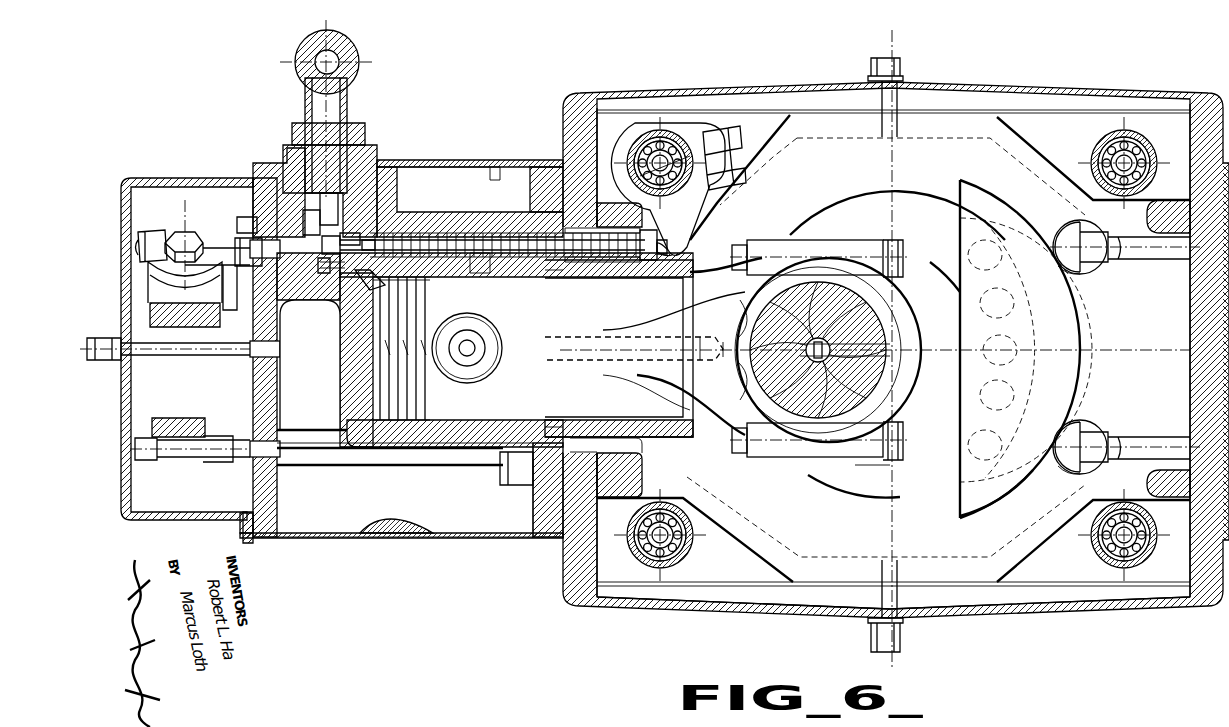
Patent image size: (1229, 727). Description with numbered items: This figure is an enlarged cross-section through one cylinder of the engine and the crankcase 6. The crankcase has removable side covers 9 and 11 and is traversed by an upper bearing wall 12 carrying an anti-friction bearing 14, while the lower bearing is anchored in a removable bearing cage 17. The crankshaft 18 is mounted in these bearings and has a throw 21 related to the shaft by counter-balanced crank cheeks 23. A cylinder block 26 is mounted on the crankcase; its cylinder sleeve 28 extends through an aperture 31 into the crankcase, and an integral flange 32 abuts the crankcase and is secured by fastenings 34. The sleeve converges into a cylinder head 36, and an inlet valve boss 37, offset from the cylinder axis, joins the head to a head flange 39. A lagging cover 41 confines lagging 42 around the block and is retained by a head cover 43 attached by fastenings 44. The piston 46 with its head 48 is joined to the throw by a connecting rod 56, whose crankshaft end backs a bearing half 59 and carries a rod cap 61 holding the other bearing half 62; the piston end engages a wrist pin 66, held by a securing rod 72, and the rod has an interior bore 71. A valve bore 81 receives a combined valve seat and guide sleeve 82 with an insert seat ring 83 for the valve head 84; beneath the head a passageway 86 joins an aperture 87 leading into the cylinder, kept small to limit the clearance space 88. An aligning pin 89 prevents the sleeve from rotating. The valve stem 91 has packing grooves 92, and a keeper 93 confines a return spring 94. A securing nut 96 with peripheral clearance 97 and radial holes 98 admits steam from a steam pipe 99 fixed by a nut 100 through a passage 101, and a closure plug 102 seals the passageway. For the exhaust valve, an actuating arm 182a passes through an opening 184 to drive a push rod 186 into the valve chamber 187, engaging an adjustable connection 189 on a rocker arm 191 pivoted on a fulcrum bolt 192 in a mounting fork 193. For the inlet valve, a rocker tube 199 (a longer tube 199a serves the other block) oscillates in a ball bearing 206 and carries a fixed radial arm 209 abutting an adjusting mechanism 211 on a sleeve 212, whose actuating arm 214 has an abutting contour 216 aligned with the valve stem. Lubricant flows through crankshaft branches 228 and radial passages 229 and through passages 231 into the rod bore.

The crankcase 6 is at (563, 572).
The side cover 9 is at (990, 609).
The side cover 11 is at (1062, 86).
The upper bearing wall 12 is at (833, 567).
The anti-friction bearing 14 is at (870, 483).
The bearing cage 17 is at (885, 353).
The crankshaft 18 is at (940, 227).
The throw 21 is at (813, 253).
The crank cheek 23 is at (990, 207).
The cylinder block 26 is at (461, 490).
The cylinder sleeve 28 is at (427, 448).
The aperture 31 is at (600, 447).
The flange 32 is at (540, 175).
The fastening 34 is at (517, 487).
The cylinder head 36 is at (350, 357).
The valve boss 37 is at (307, 280).
The head flange 39 is at (277, 512).
The lagging cover 41 is at (483, 160).
The lagging 42 is at (393, 530).
The head cover 43 is at (227, 513).
The fastening 44 is at (113, 363).
The piston 46 is at (547, 410).
The piston head 48 is at (372, 378).
The connecting rod 56 is at (641, 316).
The bearing half 59 is at (737, 410).
The rod cap 61 is at (918, 340).
The bearing half 62 is at (900, 370).
The wrist pin 66 is at (477, 327).
The bore 71 is at (640, 367).
The securing rod 72 is at (468, 348).
The valve bore 81 is at (438, 237).
The valve seat and guide sleeve 82 is at (525, 257).
The valve seat ring 83 is at (340, 217).
The valve head 84 is at (257, 253).
The passageway 86 is at (350, 225).
The aperture 87 is at (373, 285).
The clearance space 88 is at (372, 397).
The aligning pin 89 is at (357, 233).
The valve stem 91 is at (465, 247).
The packing groove 92 is at (478, 253).
The keeper 93 is at (648, 262).
The return spring 94 is at (612, 262).
The securing nut 96 is at (318, 273).
The peripheral clearance 97 is at (330, 273).
The radial hole 98 is at (375, 168).
The steam pipe 99 is at (350, 95).
The nut 100 is at (363, 130).
The passage 101 is at (257, 213).
The closure plug 102 is at (297, 213).
The actuating arm 182a is at (1068, 472).
The opening 184 is at (1097, 430).
The push rod 186 is at (1160, 437).
The valve chamber 187 is at (145, 503).
The adjustable connection 189 is at (173, 228).
The rocker arm 191 is at (175, 420).
The fulcrum bolt 192 is at (195, 238).
The mounting fork 193 is at (240, 350).
The rocker tube 199 is at (1093, 540).
The rocker tube 199a is at (688, 548).
The ball bearing 206 is at (1140, 525).
The radial arm 209 is at (698, 128).
The adjusting mechanism 211 is at (735, 160).
The sleeve 212 is at (665, 123).
The actuating arm 214 is at (684, 252).
The abutting contour 216 is at (690, 240).
The oil branch 228 is at (900, 357).
The radial passage 229 is at (750, 365).
The passage 231 is at (743, 340).